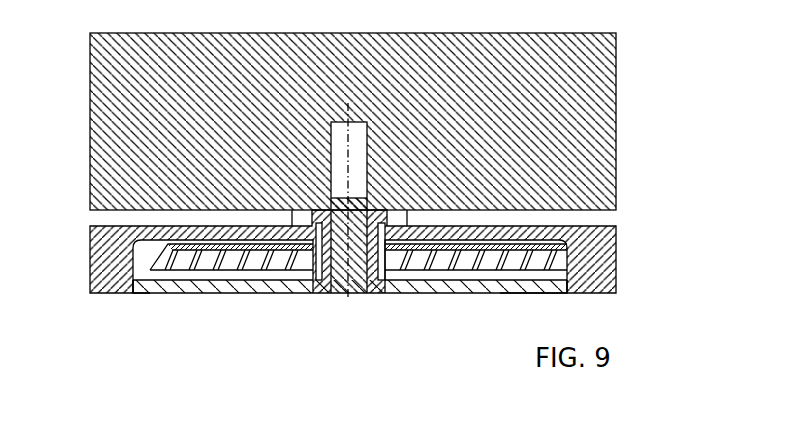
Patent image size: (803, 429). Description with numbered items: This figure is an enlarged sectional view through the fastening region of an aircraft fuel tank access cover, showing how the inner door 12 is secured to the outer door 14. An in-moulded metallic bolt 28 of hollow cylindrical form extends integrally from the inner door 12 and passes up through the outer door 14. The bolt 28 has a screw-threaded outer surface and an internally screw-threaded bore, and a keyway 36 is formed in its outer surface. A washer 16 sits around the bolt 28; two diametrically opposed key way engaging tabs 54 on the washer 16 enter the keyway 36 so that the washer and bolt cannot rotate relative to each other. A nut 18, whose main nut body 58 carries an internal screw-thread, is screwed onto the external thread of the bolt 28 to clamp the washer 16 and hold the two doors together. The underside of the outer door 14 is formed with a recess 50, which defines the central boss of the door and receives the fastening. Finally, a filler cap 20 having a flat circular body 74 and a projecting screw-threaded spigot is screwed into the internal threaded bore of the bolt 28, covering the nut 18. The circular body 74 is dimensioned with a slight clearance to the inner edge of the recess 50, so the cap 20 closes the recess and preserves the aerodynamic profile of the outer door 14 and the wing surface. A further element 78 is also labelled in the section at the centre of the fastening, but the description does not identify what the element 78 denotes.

The inner door 12 is at (616, 110).
The outer door 14 is at (616, 256).
The washer 16 is at (150, 256).
The nut 18 is at (214, 258).
The cap 20 is at (153, 287).
The in-moulded metallic bolt 28 is at (321, 278).
The keyway 36 is at (379, 265).
The recess 50 is at (133, 291).
The key way engaging tabs 54 is at (384, 268).
The main nut body 58 is at (301, 262).
The flat circular body 74 is at (513, 291).
The center pin 78 is at (357, 200).